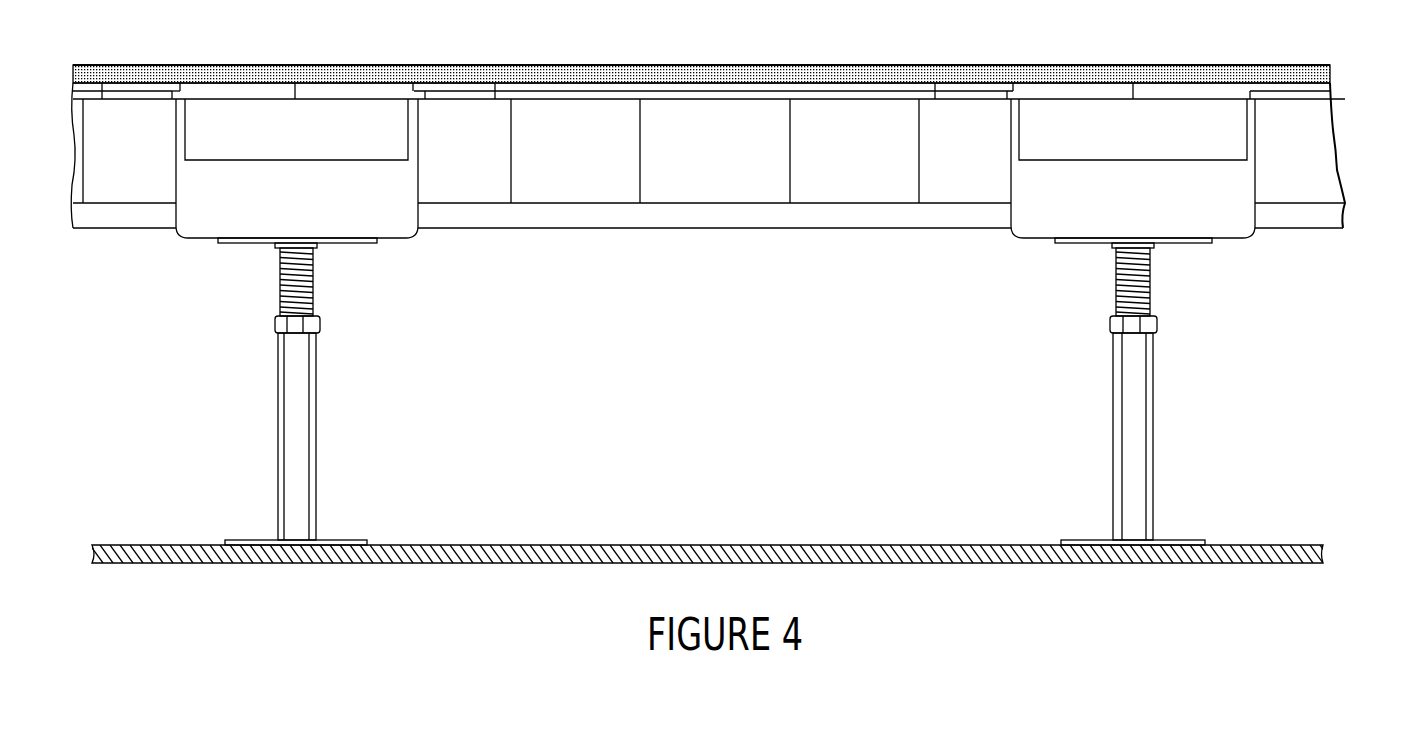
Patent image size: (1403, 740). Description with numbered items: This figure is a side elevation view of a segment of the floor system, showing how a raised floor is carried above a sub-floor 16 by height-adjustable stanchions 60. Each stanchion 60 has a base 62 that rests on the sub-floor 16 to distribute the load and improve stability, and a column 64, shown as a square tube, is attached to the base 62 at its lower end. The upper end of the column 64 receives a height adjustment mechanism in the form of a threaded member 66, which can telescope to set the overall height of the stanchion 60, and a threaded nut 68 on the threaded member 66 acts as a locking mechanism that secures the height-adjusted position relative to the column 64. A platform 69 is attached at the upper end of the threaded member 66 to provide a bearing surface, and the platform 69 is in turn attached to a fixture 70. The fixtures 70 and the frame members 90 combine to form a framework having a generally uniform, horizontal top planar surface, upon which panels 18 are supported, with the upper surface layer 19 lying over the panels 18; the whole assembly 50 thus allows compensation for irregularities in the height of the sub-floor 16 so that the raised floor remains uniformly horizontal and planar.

The sub-floor 16 is at (1226, 538).
The panels 18 is at (1335, 93).
The deck surface 19 is at (1291, 63).
The raised floor assembly 50 is at (230, 420).
The stanchion 60 is at (288, 396).
The base 62 is at (332, 537).
The column 64 is at (318, 418).
The threaded member 66 is at (318, 290).
The threaded nut 68 is at (322, 327).
The platform 69 is at (373, 243).
The fixture 70 is at (1232, 243).
The frame member 90 is at (1338, 153).